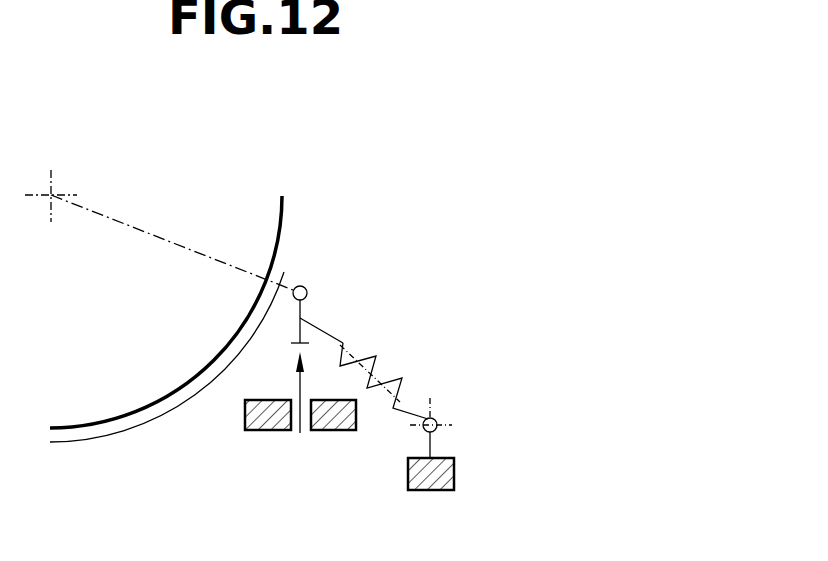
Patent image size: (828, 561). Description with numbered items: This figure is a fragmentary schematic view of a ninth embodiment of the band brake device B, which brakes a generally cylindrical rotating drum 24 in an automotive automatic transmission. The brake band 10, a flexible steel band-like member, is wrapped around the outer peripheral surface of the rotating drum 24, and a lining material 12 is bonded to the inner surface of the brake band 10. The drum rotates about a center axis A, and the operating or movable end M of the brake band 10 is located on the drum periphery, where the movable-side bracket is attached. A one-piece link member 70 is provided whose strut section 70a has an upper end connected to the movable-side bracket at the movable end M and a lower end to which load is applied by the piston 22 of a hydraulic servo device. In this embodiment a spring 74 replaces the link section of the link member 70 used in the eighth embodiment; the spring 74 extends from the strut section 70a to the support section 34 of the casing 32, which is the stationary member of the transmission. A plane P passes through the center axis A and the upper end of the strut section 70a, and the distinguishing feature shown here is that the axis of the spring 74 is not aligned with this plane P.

The brake band 10 is at (88, 448).
The lining material 12 is at (127, 429).
The piston 22 is at (298, 433).
The rotating drum 24 is at (266, 223).
The casing 32 is at (408, 476).
The support section 34 is at (440, 421).
The one-piece link member 70 is at (324, 302).
The strut section 70a is at (306, 318).
The spring 74 is at (380, 356).
The center axis A is at (55, 191).
The plane P is at (142, 231).
The movable end M is at (266, 300).
The band brake device B is at (334, 170).